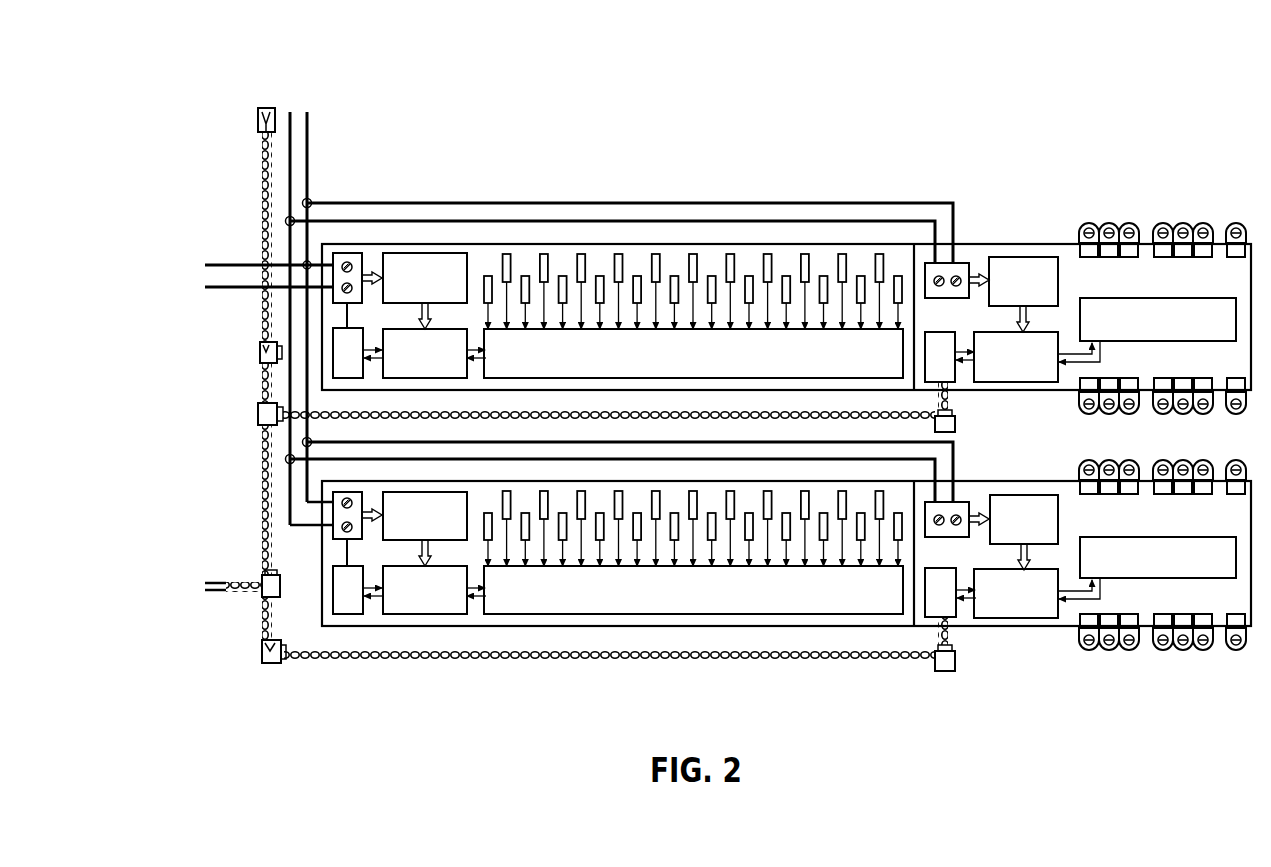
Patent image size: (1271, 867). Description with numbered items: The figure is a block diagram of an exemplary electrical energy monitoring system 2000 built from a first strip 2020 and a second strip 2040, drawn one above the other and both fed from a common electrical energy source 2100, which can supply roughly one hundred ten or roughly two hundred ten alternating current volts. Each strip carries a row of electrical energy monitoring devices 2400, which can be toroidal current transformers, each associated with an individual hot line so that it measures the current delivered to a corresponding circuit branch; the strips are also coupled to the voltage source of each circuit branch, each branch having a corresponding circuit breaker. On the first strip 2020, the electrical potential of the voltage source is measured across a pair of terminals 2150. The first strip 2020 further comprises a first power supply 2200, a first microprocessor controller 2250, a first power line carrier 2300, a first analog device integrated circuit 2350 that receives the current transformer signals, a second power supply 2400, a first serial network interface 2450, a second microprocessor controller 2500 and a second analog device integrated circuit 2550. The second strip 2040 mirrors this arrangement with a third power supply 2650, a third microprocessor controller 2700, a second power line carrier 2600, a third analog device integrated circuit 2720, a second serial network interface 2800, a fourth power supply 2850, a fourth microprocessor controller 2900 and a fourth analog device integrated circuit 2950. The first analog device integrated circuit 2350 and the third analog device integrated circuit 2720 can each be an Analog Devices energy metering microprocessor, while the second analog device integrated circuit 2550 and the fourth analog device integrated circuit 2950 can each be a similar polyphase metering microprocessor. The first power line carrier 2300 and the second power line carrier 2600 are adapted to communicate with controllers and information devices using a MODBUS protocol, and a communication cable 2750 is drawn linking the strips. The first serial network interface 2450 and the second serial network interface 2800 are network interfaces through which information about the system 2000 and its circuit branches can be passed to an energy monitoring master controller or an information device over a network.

The system 2000 is at (393, 21).
The first strip 2020 is at (1038, 243).
The second strip 2040 is at (1030, 632).
The electrical energy source 2100 is at (579, 296).
The pair of terminals 2150 is at (337, 263).
The first power supply 2200 is at (425, 278).
The first microprocessor controller 2250 is at (425, 353).
The first power line carrier 2300 is at (338, 343).
The first analog device integrated circuit 2350 is at (693, 353).
The electrical energy monitoring devices / second power supply 2400 is at (507, 255).
The first RS 485 interface 2450 is at (938, 360).
The second microprocessor controller 2500 is at (1016, 357).
The second analog device integrated circuit 2550 is at (1137, 297).
The second power line carrier 2600 is at (338, 605).
The third power supply 2650 is at (425, 516).
The third microprocessor controller 2700 is at (425, 590).
The third analog device integrated circuit 2720 is at (693, 590).
The communication cable 2750 is at (538, 660).
The second RS 485 interface 2800 is at (943, 592).
The fourth power supply 2850 is at (1024, 519).
The fourth microprocessor controller 2900 is at (1016, 593).
The fourth analog device integrated circuit 2950 is at (1158, 557).